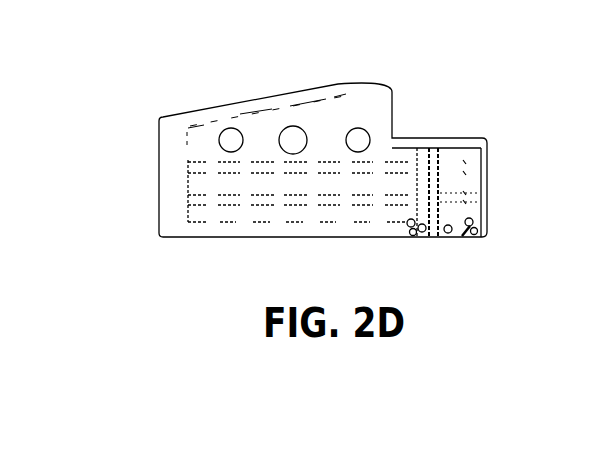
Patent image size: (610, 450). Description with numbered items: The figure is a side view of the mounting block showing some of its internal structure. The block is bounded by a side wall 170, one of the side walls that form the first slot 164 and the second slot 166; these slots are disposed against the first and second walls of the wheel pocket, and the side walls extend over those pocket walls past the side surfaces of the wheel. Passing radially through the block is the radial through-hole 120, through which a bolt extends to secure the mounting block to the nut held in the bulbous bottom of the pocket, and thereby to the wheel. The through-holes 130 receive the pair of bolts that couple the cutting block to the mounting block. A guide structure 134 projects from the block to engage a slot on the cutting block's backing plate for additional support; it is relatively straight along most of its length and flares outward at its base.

The radial through-hole 120 is at (482, 187).
The through-holes 130 is at (422, 202).
The guide structure 134 is at (446, 137).
The first slot 164 is at (255, 223).
The second slot 166 is at (212, 122).
The side wall 170 is at (167, 198).